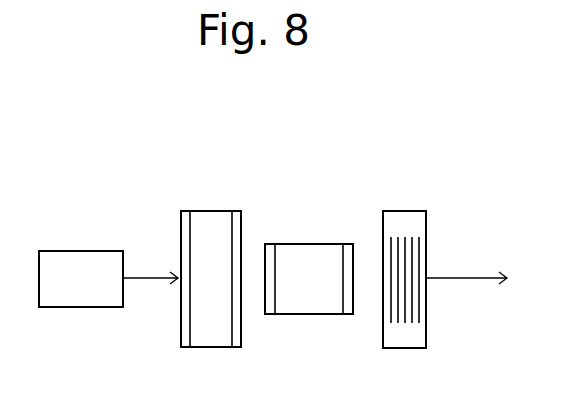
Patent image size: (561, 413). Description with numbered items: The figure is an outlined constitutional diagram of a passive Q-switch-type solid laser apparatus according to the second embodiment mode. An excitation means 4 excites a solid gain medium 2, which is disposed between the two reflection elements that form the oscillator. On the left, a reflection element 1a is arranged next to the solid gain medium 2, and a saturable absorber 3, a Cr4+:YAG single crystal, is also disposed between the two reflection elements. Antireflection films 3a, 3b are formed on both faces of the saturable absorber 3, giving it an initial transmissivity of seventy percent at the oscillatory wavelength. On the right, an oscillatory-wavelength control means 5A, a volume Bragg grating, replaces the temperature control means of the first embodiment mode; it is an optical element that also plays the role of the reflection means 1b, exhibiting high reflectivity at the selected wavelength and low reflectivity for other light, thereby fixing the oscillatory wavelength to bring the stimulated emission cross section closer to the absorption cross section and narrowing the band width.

The excitation means 4 is at (70, 307).
The solid gain medium 2 is at (185, 268).
The reflection element 1a is at (183, 325).
The saturable absorber 3 is at (310, 283).
The antireflection film 3a is at (268, 303).
The antireflection film 3b is at (350, 298).
The oscillatory-wavelength control means 5A is at (430, 243).
The reflection means 1b is at (407, 211).